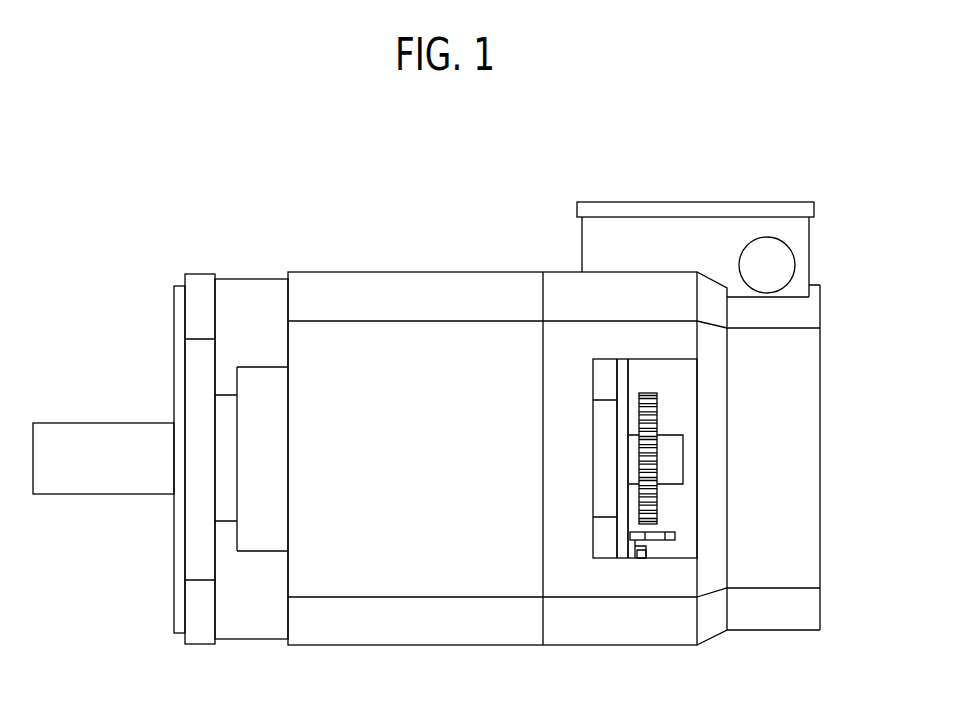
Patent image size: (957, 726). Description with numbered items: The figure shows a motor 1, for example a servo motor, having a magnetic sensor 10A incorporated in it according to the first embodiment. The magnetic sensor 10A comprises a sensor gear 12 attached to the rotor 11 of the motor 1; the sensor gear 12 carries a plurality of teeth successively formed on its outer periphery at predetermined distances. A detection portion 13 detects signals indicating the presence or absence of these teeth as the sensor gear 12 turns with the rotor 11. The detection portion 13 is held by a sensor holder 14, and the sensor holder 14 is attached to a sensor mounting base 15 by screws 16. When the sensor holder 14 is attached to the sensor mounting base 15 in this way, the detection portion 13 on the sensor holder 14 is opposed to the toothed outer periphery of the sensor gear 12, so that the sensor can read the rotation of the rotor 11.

The motor 1 is at (438, 272).
The magnetic sensor 10A is at (666, 391).
The rotor 11 is at (673, 463).
The sensor gear 12 is at (656, 423).
The detection portion 13 is at (675, 537).
The sensor holder 14 is at (630, 537).
The sensor mounting base 15 is at (622, 382).
The screws 16 is at (643, 549).